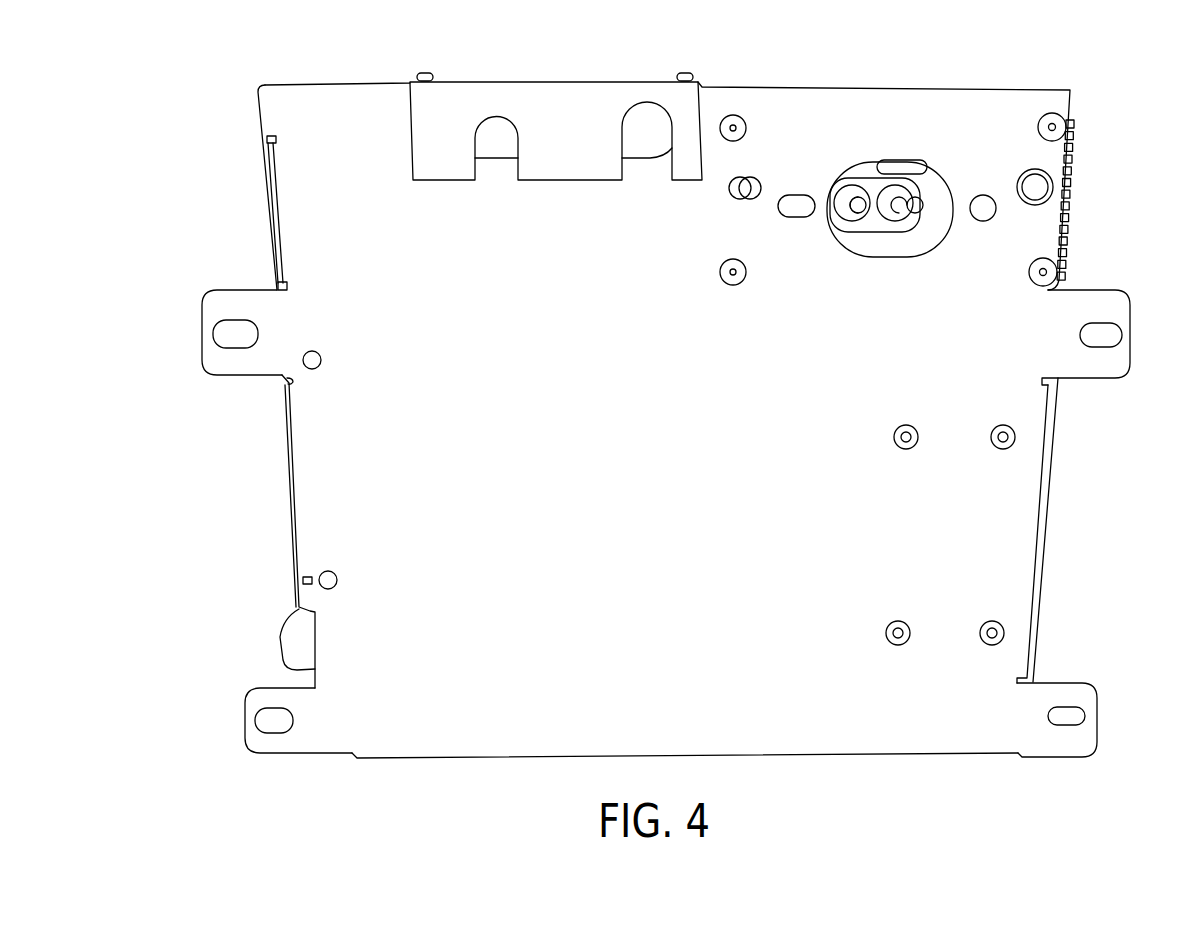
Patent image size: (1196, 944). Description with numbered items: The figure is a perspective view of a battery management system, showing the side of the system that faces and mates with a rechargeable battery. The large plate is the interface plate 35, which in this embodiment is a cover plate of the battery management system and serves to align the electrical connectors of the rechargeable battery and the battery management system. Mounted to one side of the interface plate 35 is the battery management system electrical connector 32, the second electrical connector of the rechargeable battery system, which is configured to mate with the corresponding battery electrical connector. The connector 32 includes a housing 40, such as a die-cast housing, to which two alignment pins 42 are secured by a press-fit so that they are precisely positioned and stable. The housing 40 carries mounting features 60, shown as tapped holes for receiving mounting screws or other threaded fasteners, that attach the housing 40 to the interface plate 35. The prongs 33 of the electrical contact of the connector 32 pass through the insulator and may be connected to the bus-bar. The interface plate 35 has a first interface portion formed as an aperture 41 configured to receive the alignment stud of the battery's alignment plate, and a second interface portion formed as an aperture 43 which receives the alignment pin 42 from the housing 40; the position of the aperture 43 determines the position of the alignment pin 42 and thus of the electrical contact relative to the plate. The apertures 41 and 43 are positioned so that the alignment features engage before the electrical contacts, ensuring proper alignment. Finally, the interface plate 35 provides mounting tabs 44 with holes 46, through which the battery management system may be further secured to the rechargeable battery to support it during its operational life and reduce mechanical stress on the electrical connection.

The battery management system electrical connector 32 is at (890, 157).
The prongs 33 is at (858, 210).
The interface plate 35 is at (970, 98).
The housing 40 is at (1070, 203).
The aperture 41 is at (788, 195).
The alignment pin 42 is at (745, 190).
The aperture 43 is at (730, 193).
The mounting tabs 44 is at (245, 290).
The holes 46 is at (205, 340).
The mounting features 60 is at (735, 126).